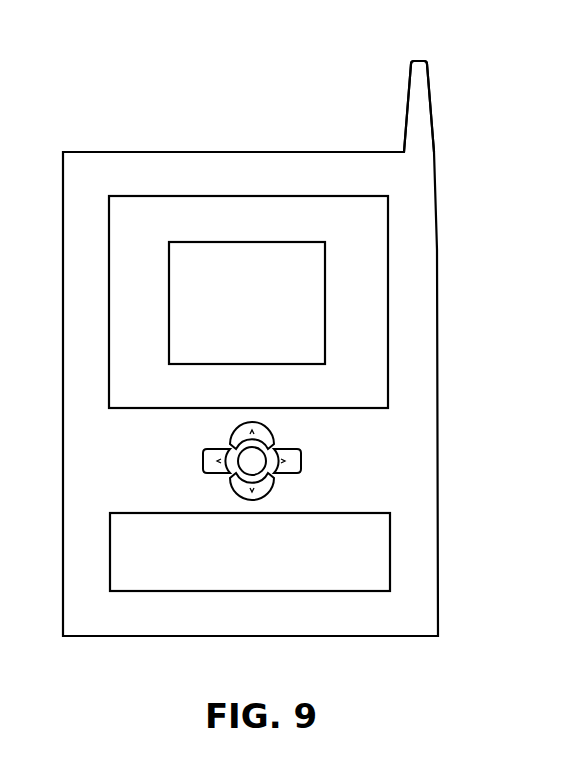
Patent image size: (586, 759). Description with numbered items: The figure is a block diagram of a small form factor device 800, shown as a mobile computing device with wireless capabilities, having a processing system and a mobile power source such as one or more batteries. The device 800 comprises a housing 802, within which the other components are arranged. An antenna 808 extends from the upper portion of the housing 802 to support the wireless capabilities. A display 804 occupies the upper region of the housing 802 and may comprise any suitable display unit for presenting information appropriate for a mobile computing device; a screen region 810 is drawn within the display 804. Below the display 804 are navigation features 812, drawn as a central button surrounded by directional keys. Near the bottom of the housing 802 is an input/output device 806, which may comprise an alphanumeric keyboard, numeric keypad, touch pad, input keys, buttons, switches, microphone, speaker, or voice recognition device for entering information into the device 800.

The small form factor device 800 is at (123, 70).
The housing 802 is at (437, 355).
The display 804 is at (388, 213).
The input/output (I/O) device 806 is at (390, 543).
The antenna 808 is at (410, 78).
The display screen 810 is at (326, 288).
The navigation features 812 is at (315, 483).